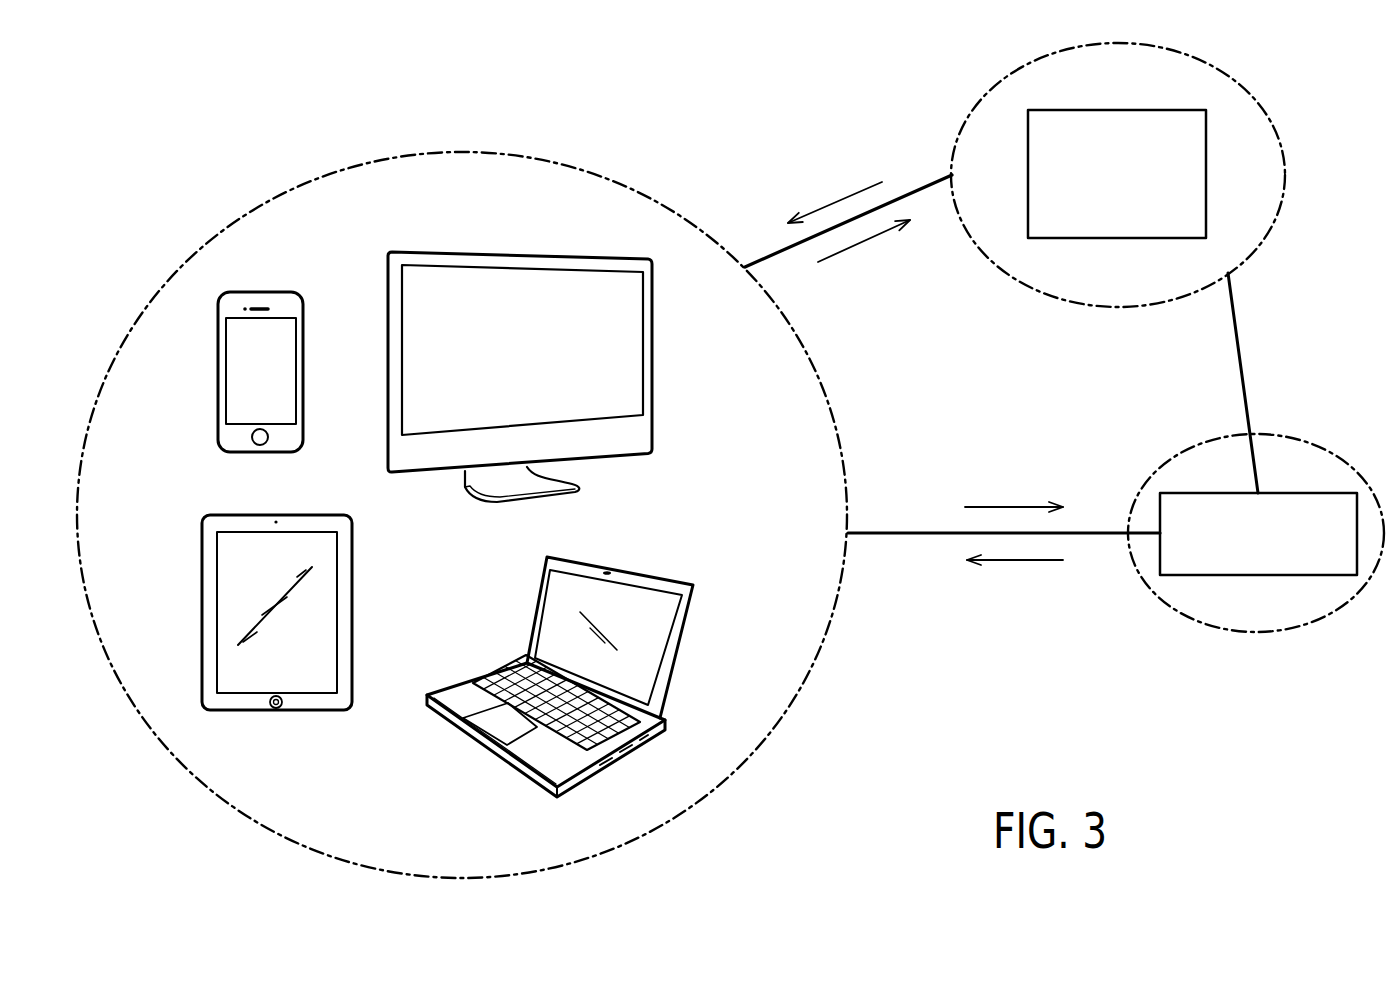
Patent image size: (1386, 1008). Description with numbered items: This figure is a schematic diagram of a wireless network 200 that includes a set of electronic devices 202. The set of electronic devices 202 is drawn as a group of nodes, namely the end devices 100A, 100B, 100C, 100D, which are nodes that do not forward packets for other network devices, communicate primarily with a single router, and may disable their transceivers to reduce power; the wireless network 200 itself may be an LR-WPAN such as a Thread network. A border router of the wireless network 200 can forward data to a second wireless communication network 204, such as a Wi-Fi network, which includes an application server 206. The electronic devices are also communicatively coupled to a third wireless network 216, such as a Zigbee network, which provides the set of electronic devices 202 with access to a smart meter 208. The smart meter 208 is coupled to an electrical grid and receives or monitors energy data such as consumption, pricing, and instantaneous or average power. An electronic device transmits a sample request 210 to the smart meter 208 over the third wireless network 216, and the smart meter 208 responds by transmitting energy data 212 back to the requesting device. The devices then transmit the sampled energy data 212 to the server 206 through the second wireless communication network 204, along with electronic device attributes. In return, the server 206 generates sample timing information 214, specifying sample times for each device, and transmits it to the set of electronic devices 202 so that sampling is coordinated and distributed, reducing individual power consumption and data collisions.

The wireless network 200 is at (184, 135).
The set of electronic devices 202 is at (180, 760).
The end device 100A is at (653, 447).
The end device 100B is at (535, 612).
The end device 100C is at (267, 292).
The end device 100D is at (200, 613).
The second wireless communication network 204 is at (1160, 175).
The application server 206 is at (1143, 218).
The smart meter 208 is at (1286, 568).
The sample request 210 is at (1010, 507).
The energy data 212 is at (857, 245).
The sample timing information 214 is at (842, 200).
The third wireless network 216 is at (1256, 559).